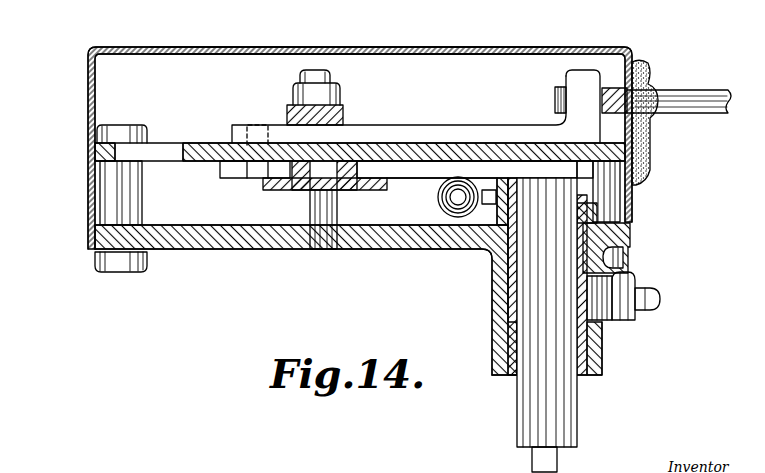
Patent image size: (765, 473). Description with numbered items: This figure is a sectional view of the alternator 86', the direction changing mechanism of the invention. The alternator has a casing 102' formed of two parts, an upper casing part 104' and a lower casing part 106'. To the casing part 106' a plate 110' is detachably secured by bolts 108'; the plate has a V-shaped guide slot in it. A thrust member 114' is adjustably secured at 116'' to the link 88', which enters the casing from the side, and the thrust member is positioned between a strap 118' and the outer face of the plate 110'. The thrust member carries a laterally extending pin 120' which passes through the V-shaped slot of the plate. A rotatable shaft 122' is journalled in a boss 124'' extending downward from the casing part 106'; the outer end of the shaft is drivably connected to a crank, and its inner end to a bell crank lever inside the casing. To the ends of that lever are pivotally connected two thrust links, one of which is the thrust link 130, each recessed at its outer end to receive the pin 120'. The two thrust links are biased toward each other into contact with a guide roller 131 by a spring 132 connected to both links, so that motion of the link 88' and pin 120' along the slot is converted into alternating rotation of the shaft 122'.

The alternator 86' is at (373, 134).
The casing 102' is at (360, 134).
The casing part 104' is at (355, 36).
The link 88' is at (646, 86).
The adjustable securing point 116'' is at (568, 100).
The thrust member 114' is at (416, 100).
The plate 110' is at (360, 130).
The pin 120' is at (251, 138).
The strap 118' is at (346, 159).
The guide roller 131 is at (297, 197).
The thrust link 130 is at (423, 172).
The spring 132 is at (457, 206).
The casing part 106' is at (306, 300).
The boss 124'' is at (511, 276).
The shaft 122' is at (517, 325).
The bolts 108' is at (365, 203).